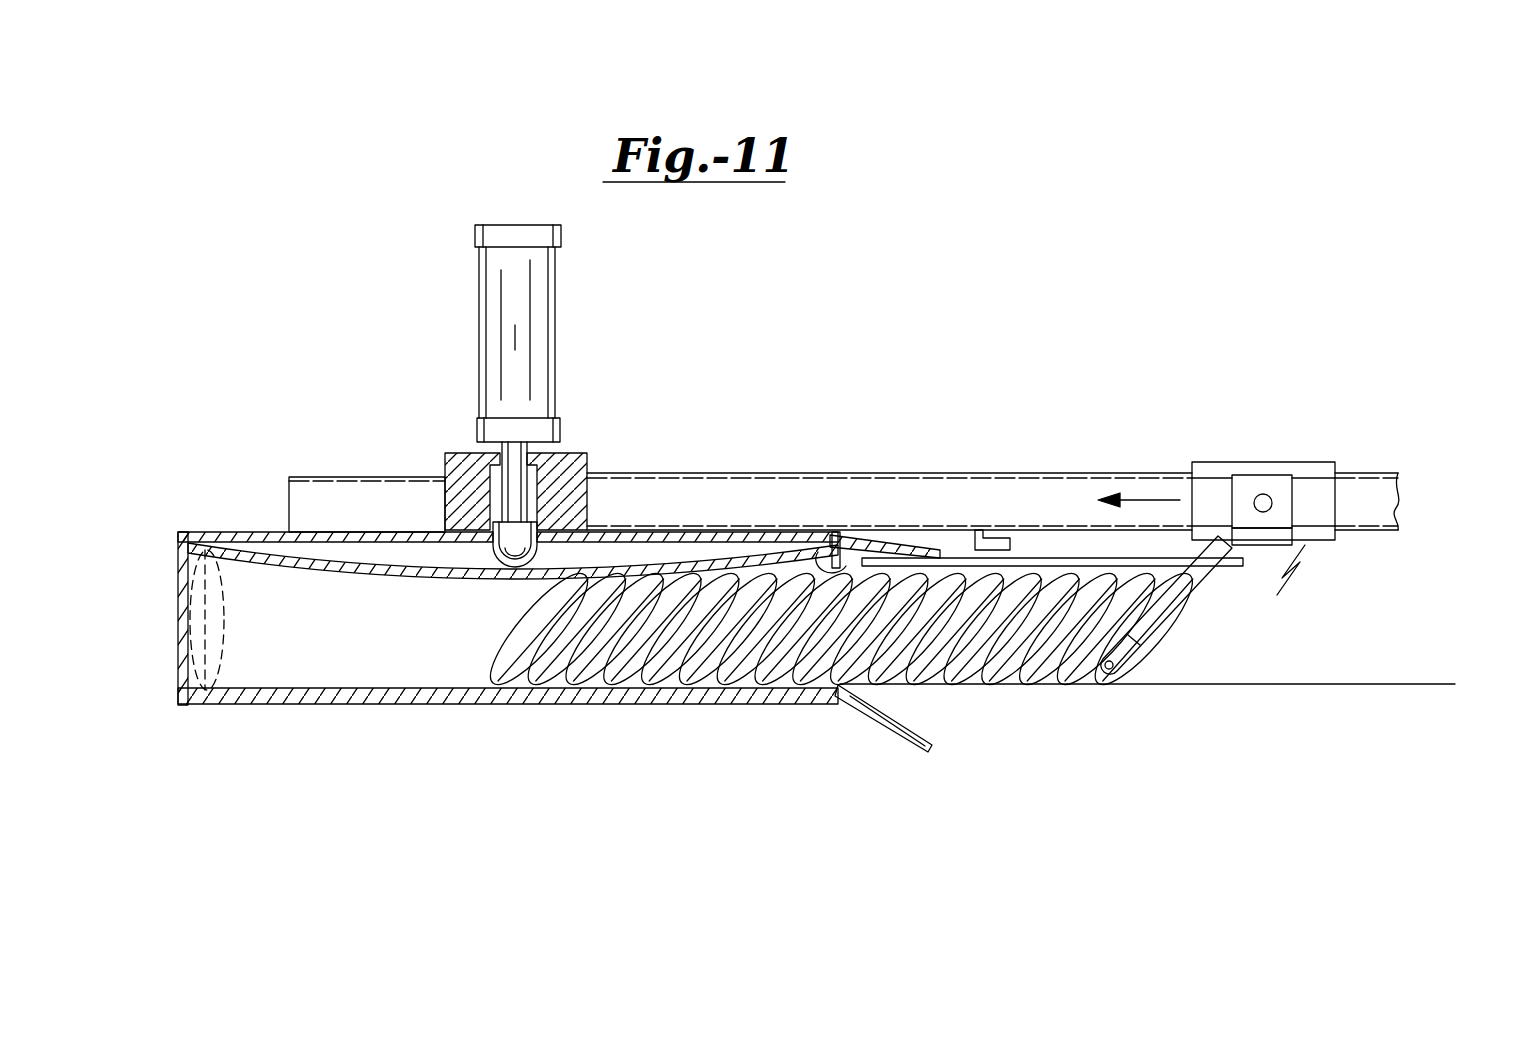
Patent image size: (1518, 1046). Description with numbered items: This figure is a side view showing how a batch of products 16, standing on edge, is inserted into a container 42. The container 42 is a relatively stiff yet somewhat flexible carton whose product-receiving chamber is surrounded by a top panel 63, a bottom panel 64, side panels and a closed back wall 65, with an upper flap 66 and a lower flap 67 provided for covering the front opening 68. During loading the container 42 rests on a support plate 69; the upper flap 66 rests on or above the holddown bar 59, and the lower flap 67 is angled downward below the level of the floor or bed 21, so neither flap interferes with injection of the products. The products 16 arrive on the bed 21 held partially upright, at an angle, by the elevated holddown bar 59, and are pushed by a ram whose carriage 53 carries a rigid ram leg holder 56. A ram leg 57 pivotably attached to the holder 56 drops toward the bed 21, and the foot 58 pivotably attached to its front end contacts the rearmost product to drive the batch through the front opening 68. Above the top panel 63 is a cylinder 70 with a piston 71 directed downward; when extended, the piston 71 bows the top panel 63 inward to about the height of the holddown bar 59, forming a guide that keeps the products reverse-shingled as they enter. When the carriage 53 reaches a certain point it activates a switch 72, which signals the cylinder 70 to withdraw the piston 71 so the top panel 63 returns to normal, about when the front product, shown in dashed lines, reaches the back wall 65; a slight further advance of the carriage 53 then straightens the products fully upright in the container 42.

The product 16 is at (222, 655).
The floor or bed 21 is at (1440, 683).
The container 42 is at (280, 548).
The carriage 53 is at (1318, 464).
The ram leg holder 56 is at (1273, 475).
The ram leg 57 is at (1193, 598).
The foot 58 is at (1125, 668).
The holddown bar 59 is at (1253, 567).
The top panel 63 is at (413, 576).
The bottom panel 64 is at (312, 688).
The back wall 65 is at (178, 658).
The upper flap 66 is at (905, 545).
The lower flap 67 is at (882, 722).
The front opening 68 is at (806, 548).
The support plate 69 is at (572, 705).
The cylinder 70 is at (555, 362).
The piston 71 is at (563, 446).
The switch 72 is at (1000, 532).